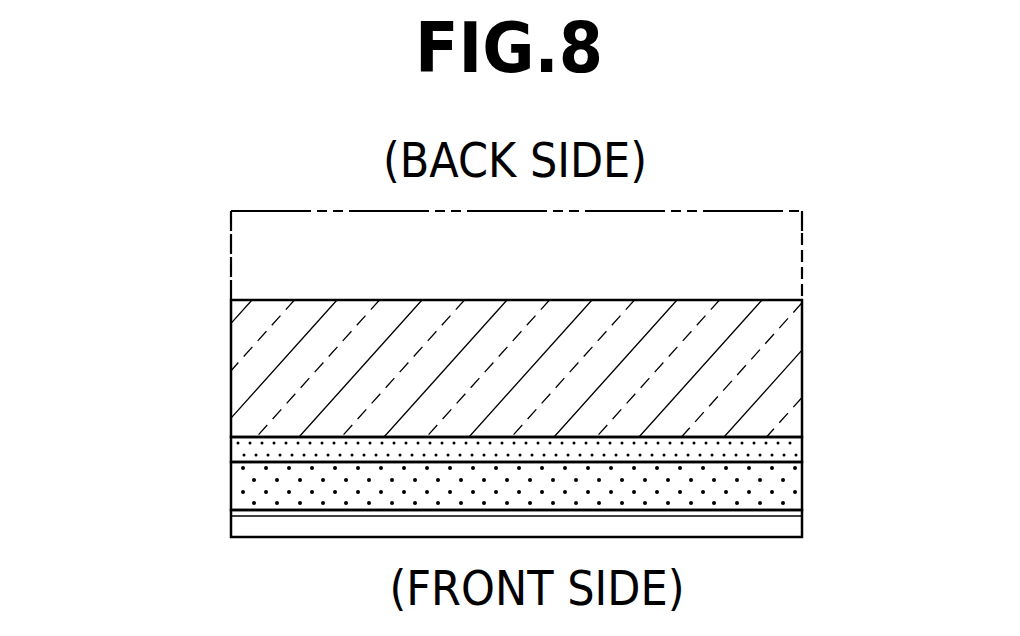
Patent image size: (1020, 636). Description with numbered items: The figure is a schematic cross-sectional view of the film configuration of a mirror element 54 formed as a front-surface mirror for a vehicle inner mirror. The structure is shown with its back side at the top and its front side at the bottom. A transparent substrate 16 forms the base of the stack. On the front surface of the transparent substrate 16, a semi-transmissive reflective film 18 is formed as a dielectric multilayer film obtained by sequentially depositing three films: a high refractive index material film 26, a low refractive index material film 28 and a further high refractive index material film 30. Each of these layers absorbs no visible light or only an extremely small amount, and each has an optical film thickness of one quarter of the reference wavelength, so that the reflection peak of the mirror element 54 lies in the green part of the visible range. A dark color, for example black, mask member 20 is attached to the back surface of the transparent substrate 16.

The mask member 20 is at (803, 233).
The mirror element 54 is at (466, 424).
The transparent substrate 16 is at (250, 346).
The high refractive index material film 26 is at (231, 446).
The low refractive index material film 28 is at (231, 485).
The high refractive index material film 30 is at (467, 519).
The semi-transmissive reflective film 18 is at (523, 464).